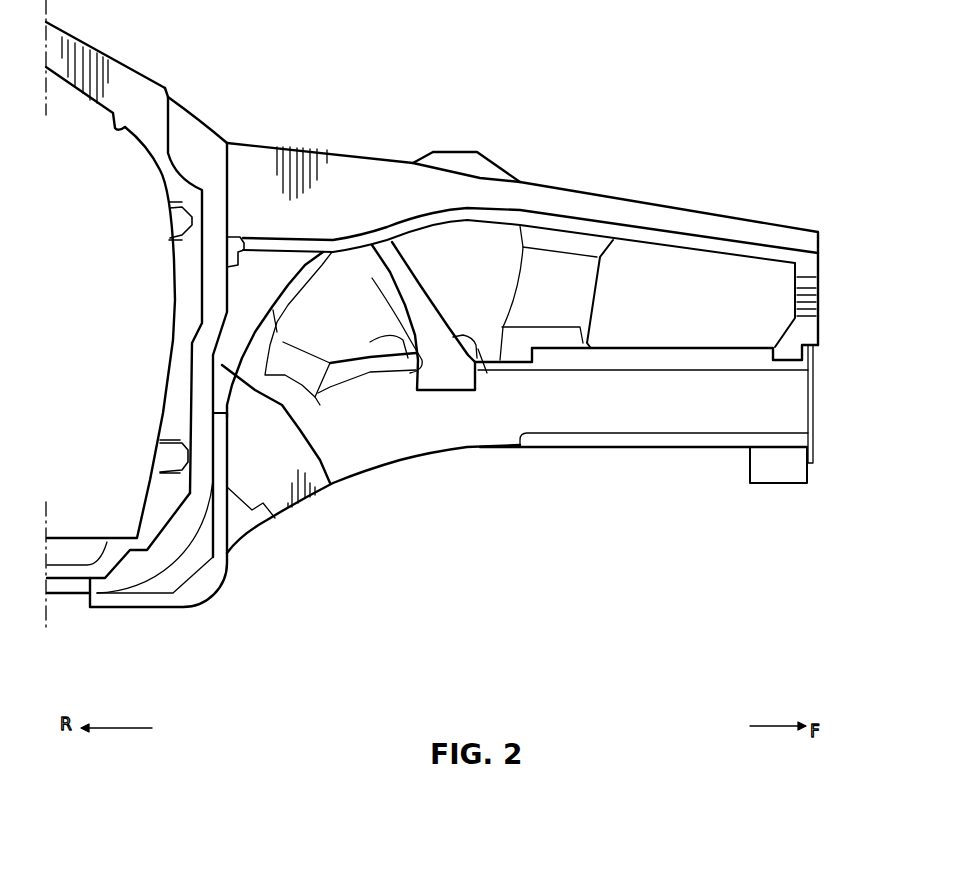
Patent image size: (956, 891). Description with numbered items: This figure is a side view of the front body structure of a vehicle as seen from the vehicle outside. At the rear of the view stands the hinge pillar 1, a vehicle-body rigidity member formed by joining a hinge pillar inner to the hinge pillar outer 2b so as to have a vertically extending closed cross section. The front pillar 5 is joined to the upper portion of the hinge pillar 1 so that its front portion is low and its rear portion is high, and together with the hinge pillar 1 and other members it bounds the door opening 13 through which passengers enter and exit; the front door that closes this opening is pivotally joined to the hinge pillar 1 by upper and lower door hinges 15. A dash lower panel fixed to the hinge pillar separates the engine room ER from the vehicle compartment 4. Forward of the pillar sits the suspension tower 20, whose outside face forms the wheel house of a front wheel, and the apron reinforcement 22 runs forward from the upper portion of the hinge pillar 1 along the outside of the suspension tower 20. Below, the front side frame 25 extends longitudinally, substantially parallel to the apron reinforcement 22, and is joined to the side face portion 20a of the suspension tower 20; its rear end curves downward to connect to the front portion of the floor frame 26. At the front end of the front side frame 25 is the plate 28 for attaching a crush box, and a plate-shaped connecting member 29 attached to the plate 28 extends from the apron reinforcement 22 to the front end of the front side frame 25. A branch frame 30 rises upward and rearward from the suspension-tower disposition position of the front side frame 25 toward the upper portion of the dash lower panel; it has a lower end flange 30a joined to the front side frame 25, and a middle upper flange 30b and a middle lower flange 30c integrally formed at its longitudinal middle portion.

The hinge pillar 1 is at (167, 290).
The vehicle compartment 4 is at (67, 350).
The front pillar 5 is at (127, 77).
The door opening 13 is at (128, 127).
The door hinge 15 is at (166, 222).
The suspension tower 20 is at (500, 155).
The side face portion 20a is at (500, 282).
The apron reinforcement 22 is at (662, 207).
The front side frame 25 is at (646, 450).
The floor frame 26 is at (250, 527).
The plate 28 is at (811, 418).
The connecting member 29 is at (818, 322).
The hinge pillar outer 2b is at (332, 484).
The branch frame 30 is at (426, 397).
The lower end flange 30a is at (443, 385).
The middle upper flange 30b is at (480, 350).
The middle lower flange 30c is at (382, 343).
The engine room ER is at (617, 560).